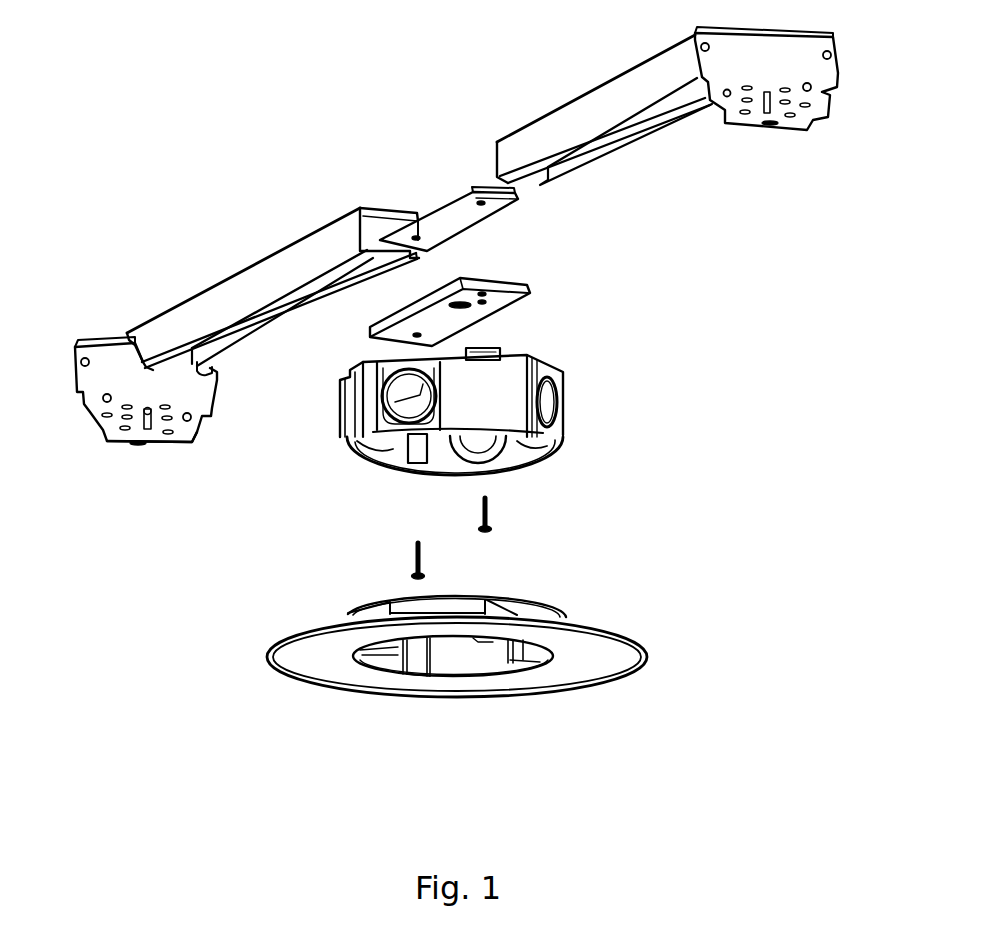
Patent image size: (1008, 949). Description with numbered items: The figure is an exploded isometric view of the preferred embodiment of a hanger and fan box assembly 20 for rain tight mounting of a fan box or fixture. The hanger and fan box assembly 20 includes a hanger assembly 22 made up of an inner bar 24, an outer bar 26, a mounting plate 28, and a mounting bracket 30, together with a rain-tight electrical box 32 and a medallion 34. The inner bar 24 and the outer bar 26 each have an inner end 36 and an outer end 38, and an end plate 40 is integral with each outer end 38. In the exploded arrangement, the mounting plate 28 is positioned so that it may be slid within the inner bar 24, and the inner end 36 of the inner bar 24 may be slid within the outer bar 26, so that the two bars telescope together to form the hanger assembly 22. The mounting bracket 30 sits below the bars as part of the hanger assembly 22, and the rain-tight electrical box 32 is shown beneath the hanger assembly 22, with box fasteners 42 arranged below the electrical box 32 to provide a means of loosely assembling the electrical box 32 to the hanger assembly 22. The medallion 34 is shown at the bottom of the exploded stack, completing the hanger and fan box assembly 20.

The hanger and fan box assembly 20 is at (147, 200).
The hanger assembly 22 is at (563, 252).
The inner bar 24 is at (593, 91).
The outer bar 26 is at (224, 279).
The mounting plate 28 is at (440, 197).
The mounting bracket 30 is at (492, 317).
The rain-tight electrical box 32 is at (565, 439).
The medallion 34 is at (607, 681).
The inner end 36 is at (386, 207).
The outer end 38 is at (93, 343).
The end plate 40 is at (194, 436).
The box fasteners 42 is at (492, 512).